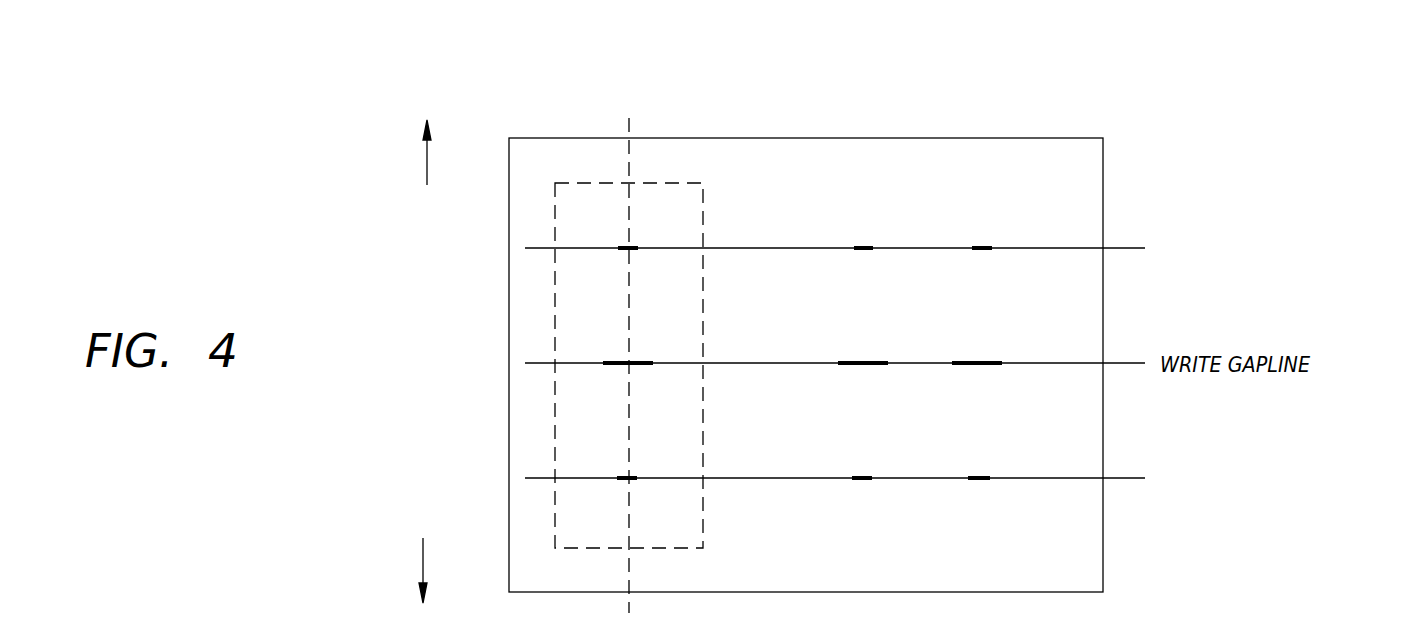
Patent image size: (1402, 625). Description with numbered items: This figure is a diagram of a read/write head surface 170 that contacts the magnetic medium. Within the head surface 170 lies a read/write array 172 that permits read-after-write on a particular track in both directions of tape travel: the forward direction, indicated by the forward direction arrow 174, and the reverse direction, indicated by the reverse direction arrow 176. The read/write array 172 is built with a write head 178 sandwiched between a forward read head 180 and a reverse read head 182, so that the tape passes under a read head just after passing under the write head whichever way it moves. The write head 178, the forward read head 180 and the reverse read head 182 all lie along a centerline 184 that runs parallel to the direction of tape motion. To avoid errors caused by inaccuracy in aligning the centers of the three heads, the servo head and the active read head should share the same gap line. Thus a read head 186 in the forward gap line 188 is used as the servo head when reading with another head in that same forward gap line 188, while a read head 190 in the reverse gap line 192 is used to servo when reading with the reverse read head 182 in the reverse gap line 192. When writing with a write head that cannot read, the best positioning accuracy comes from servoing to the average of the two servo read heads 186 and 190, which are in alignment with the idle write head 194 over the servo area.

The read/write head surface 170 is at (910, 123).
The read/write array 172 is at (702, 513).
The forward direction arrow 174 is at (425, 163).
The reverse direction arrow 176 is at (421, 572).
The write head 178 is at (632, 362).
The forward read head 180 is at (632, 242).
The reverse read head 182 is at (627, 476).
The centerline 184 is at (630, 128).
The read head 186 is at (865, 240).
The forward gap line 188 is at (1127, 245).
The read head 190 is at (861, 470).
The reverse gap line 192 is at (1123, 478).
The idle write head 194 is at (862, 355).